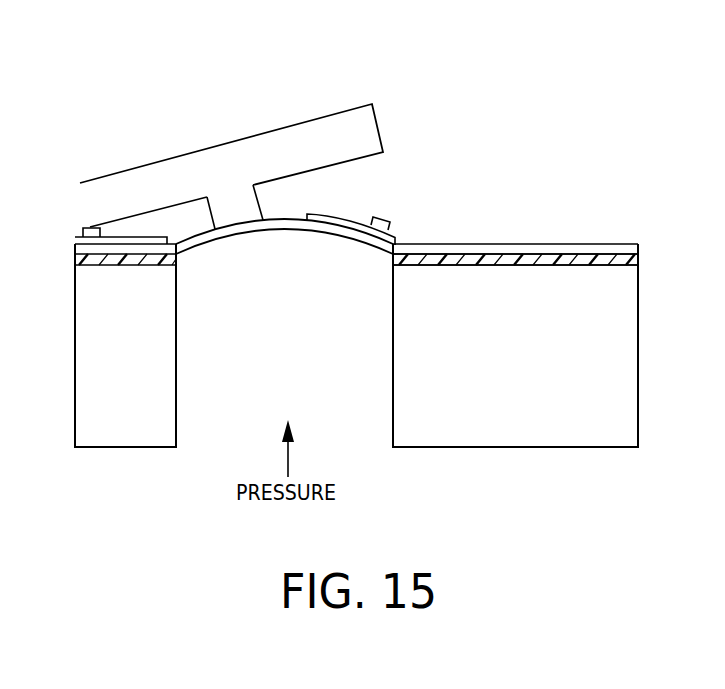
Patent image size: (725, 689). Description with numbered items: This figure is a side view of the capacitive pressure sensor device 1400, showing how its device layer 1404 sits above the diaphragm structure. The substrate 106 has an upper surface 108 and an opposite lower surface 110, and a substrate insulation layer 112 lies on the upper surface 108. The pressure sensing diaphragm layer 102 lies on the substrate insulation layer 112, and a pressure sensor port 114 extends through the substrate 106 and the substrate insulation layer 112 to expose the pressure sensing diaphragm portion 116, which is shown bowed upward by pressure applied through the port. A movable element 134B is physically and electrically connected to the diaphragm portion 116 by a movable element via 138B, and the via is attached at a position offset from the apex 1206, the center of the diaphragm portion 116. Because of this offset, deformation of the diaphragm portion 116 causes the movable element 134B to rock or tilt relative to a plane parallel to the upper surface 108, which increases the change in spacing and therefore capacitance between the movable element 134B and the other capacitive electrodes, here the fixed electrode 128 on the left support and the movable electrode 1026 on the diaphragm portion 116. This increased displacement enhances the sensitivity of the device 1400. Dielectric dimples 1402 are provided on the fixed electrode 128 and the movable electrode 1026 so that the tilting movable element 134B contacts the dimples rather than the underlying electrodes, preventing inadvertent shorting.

The pressure sensing diaphragm layer 102 is at (648, 246).
The substrate 106 is at (530, 378).
The upper surface 108 is at (573, 265).
The lower surface 110 is at (570, 447).
The substrate insulation layer 112 is at (648, 261).
The pressure sensor port 114 is at (285, 378).
The pressure sensing diaphragm portion 116 is at (248, 246).
The fixed electrode 128 is at (147, 238).
The movable element 134B is at (278, 143).
The movable element via 138B is at (253, 208).
The movable electrode 1026 is at (353, 229).
The apex 1206 is at (290, 230).
The capacitive pressure sensor device 1400 is at (602, 186).
The dielectric dimples 1402 is at (82, 229).
The device layer 1404 is at (428, 132).